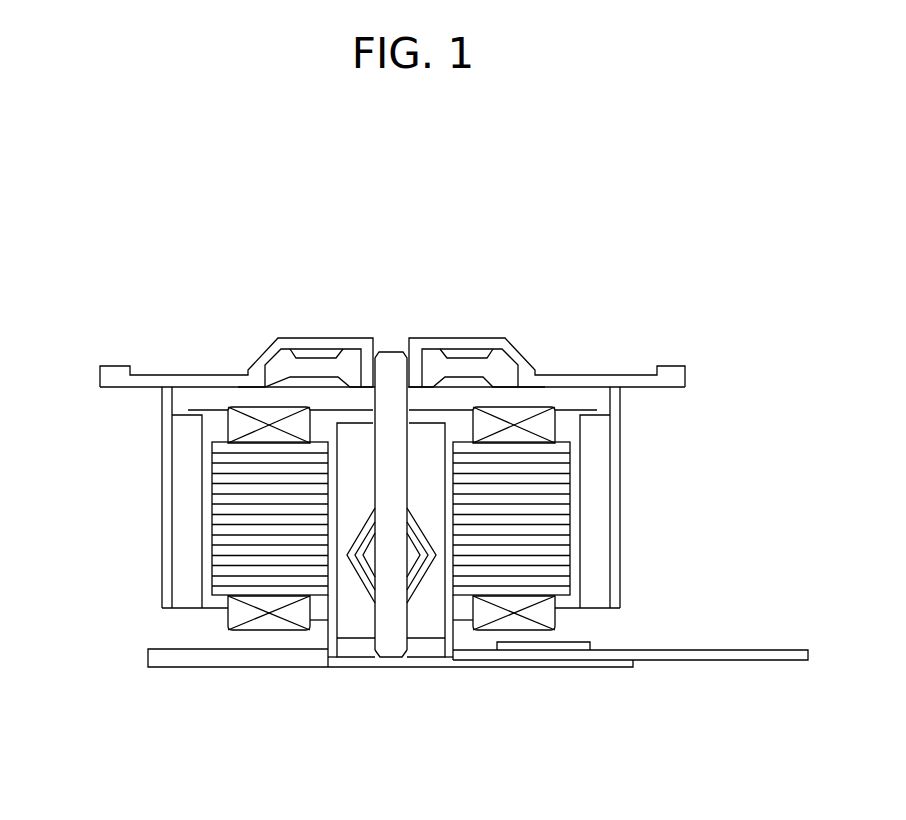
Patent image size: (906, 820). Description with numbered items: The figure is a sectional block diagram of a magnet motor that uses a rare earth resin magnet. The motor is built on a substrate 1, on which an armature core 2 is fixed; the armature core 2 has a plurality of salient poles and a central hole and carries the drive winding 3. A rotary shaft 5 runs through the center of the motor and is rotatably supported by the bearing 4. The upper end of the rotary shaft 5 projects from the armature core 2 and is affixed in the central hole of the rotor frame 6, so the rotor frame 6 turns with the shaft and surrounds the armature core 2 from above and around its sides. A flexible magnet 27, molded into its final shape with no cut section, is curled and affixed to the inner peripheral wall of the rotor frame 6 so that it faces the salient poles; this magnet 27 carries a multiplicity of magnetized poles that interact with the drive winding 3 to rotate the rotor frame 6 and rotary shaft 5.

The substrate 1 is at (667, 642).
The armature core 2 is at (543, 503).
The drive winding 3 is at (547, 408).
The bearing 4 is at (418, 593).
The rotary shaft 5 is at (390, 607).
The rotor frame 6 is at (160, 370).
The flexible magnet 27 is at (187, 522).